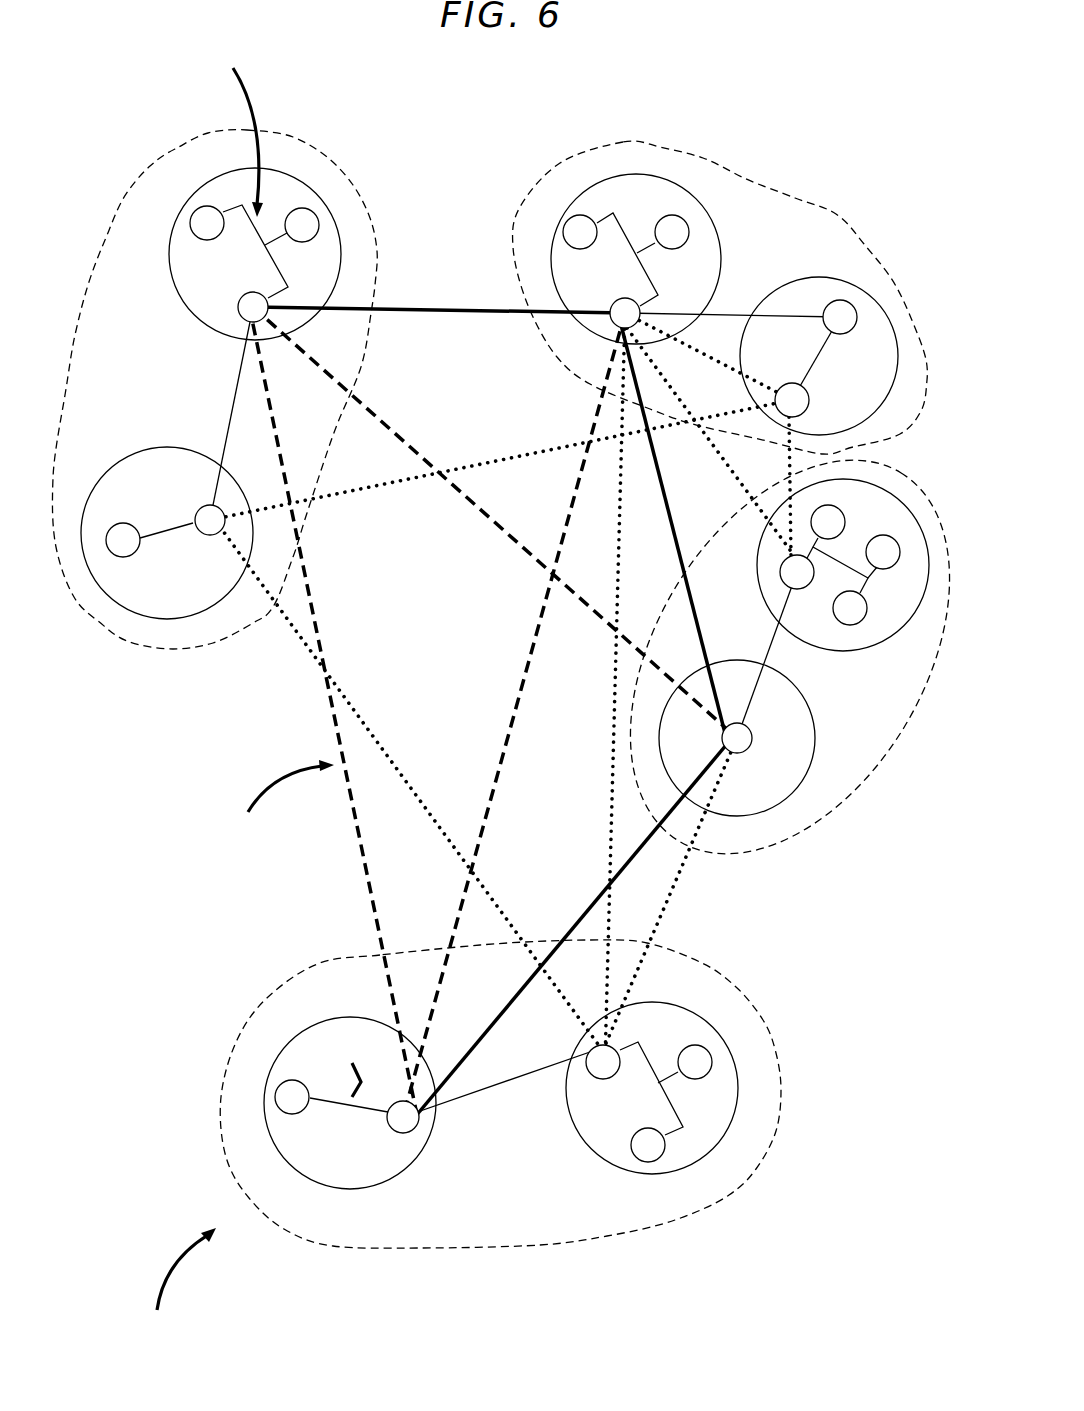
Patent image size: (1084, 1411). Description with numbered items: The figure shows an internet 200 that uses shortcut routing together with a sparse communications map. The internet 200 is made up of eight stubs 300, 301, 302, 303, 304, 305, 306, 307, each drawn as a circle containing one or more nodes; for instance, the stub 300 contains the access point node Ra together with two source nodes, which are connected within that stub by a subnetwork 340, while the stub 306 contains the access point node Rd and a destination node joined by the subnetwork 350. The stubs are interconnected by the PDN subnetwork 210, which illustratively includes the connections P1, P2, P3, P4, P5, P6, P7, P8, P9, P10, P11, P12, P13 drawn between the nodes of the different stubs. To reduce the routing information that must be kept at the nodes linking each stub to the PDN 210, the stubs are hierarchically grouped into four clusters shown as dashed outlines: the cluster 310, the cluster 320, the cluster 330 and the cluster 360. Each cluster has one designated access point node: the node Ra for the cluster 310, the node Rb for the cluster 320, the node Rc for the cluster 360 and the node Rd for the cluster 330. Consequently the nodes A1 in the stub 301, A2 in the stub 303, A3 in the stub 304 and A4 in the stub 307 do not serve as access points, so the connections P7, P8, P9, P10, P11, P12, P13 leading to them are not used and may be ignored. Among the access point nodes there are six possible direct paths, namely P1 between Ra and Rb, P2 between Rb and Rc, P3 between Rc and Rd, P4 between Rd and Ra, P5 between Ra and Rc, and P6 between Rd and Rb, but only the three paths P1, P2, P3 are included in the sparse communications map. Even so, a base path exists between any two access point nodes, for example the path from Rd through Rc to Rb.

The internet 200 is at (174, 1293).
The PDN subnetwork 210 is at (270, 799).
The stub 300 is at (255, 254).
The stub 301 is at (167, 533).
The stub 302 is at (636, 259).
The stub 303 is at (819, 356).
The stub 304 is at (843, 565).
The stub 305 is at (737, 738).
The stub 306 is at (350, 1103).
The stub 307 is at (652, 1088).
The cluster 310 is at (327, 157).
The cluster 320 is at (795, 198).
The cluster 330 is at (780, 1122).
The subnetwork 340 is at (239, 125).
The subnetwork 350 is at (344, 1063).
The cluster 360 is at (880, 776).
The connection P1 is at (452, 312).
The connection P2 is at (678, 540).
The connection P3 is at (616, 875).
The connection P4 is at (338, 740).
The connection P5 is at (458, 467).
The connection P6 is at (523, 690).
The connection P7 is at (395, 765).
The connection P8 is at (605, 980).
The connection P9 is at (677, 870).
The connection P10 is at (390, 482).
The connection P11 is at (708, 367).
The connection P12 is at (737, 483).
The connection P13 is at (777, 457).
The access point node Ra is at (264, 321).
The access point node Rb is at (615, 330).
The access point node Rc is at (722, 732).
The access point node Rd is at (412, 1135).
The node A1 is at (196, 510).
The node A2 is at (782, 384).
The node A3 is at (811, 588).
The node A4 is at (615, 1079).